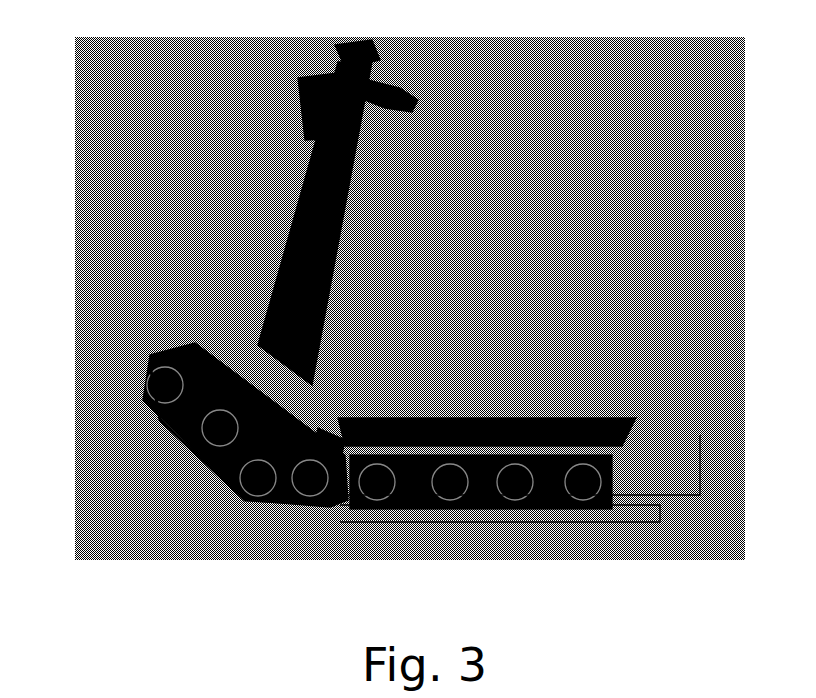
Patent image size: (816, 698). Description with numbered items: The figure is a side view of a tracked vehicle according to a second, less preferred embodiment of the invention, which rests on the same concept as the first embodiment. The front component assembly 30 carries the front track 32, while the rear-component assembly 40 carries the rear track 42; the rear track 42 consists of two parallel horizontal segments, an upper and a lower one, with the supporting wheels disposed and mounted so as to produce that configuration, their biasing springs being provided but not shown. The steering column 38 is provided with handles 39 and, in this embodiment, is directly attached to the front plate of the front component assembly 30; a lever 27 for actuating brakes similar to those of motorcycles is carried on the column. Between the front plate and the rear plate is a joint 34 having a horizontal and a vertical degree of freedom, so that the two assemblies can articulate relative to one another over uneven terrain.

The lever 27 is at (376, 58).
The handles 39 is at (403, 100).
The steering column 38 is at (345, 205).
The rear-component assembly 40 is at (548, 418).
The front component assembly 30 is at (128, 352).
The front track 32 is at (157, 425).
The joint 34 is at (332, 442).
The rear track 42 is at (550, 507).